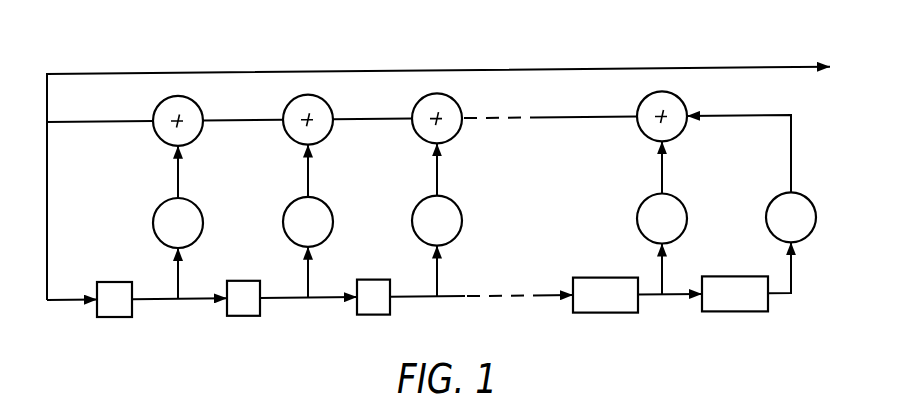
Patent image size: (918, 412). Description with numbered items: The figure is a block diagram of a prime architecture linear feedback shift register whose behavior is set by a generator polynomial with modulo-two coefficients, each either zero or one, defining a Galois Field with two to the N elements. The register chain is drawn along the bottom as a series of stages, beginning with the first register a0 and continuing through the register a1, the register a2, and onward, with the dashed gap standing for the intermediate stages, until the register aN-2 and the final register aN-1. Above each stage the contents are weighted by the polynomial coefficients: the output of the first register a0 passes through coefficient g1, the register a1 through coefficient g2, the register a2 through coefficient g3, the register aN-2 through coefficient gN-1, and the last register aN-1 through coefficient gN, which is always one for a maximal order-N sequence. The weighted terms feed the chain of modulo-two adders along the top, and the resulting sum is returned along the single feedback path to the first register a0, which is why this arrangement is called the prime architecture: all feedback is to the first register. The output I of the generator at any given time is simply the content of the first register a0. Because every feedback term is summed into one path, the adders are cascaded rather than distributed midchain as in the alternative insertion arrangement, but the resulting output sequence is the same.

The first register a0 is at (114, 300).
The register stage a1 is at (243, 299).
The register stage a2 is at (373, 298).
The register stage aN-2 is at (605, 294).
The register stage aN-1 is at (735, 292).
The polynomial coefficient g1 is at (178, 223).
The polynomial coefficient g2 is at (308, 222).
The polynomial coefficient g3 is at (437, 221).
The polynomial coefficient gN-1 is at (662, 219).
The polynomial coefficient gN is at (791, 217).
The output I is at (839, 67).